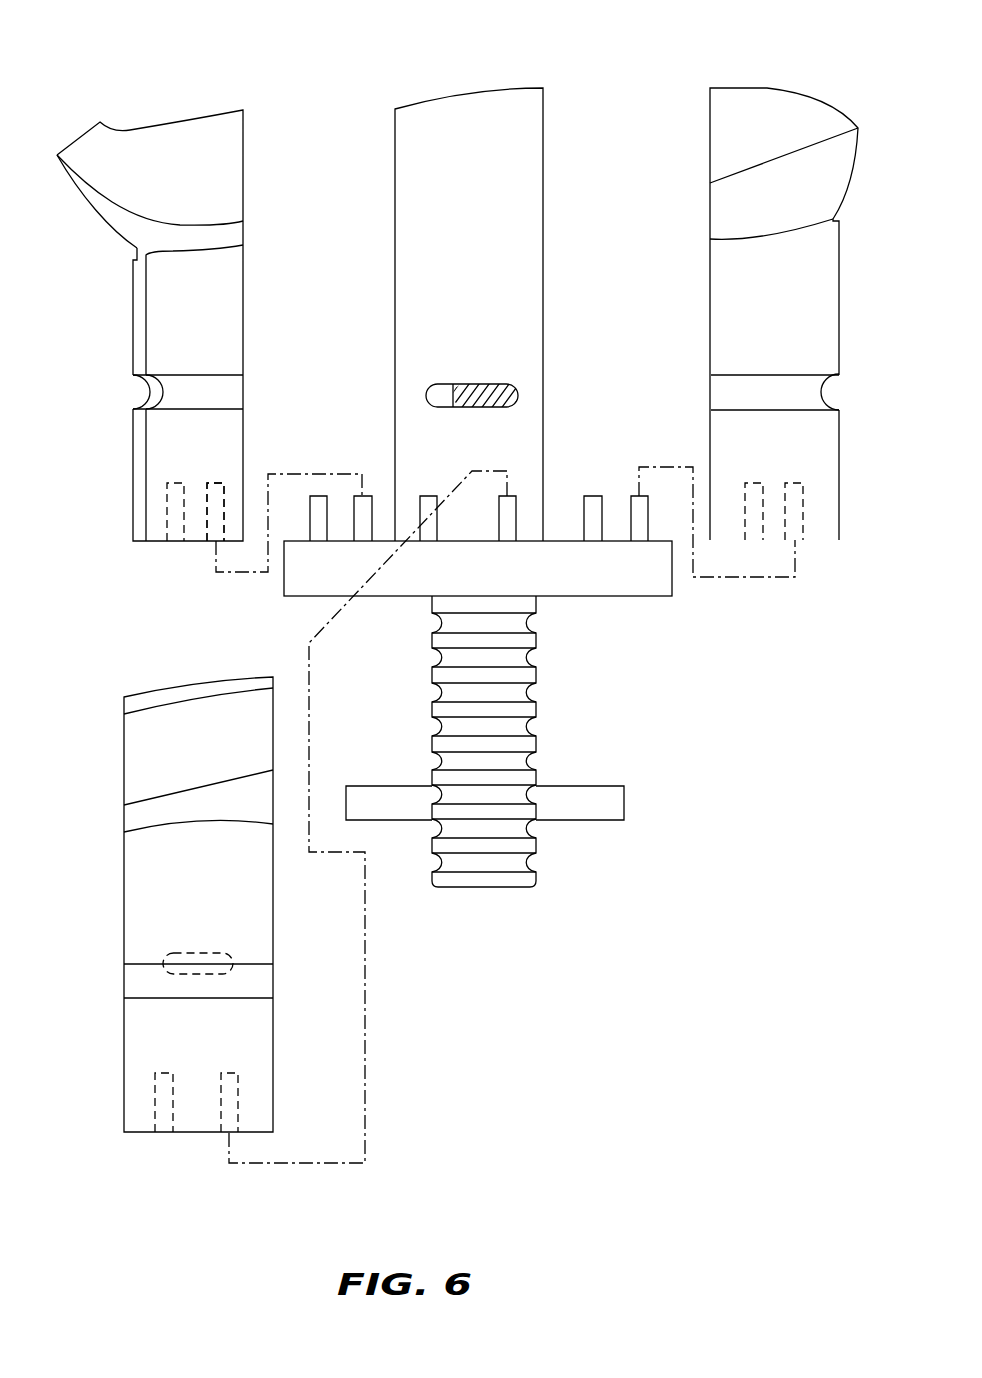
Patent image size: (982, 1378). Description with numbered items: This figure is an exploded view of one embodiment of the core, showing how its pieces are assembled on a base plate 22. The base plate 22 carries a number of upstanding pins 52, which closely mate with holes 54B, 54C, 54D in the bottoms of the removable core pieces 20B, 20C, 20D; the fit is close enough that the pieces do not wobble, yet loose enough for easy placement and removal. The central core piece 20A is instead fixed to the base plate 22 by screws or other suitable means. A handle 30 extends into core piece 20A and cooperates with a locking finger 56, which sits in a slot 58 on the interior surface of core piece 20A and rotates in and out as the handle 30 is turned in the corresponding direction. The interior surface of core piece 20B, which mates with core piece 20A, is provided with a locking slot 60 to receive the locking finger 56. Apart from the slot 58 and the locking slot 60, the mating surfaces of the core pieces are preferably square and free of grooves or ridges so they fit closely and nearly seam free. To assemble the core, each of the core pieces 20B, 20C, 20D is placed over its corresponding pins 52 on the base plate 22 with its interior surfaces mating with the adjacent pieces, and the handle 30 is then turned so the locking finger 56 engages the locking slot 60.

The core piece 20A is at (443, 137).
The core piece 20B is at (200, 687).
The core piece 20C is at (167, 197).
The core piece 20D is at (783, 118).
The base plate 22 is at (663, 578).
The handle 30 is at (527, 847).
The pins 52 is at (366, 497).
The holes 54B is at (162, 1136).
The holes 54C is at (214, 530).
The holes 54D is at (800, 543).
The locking finger 56 is at (484, 386).
The slot 58 is at (445, 390).
The locking slot 60 is at (223, 957).